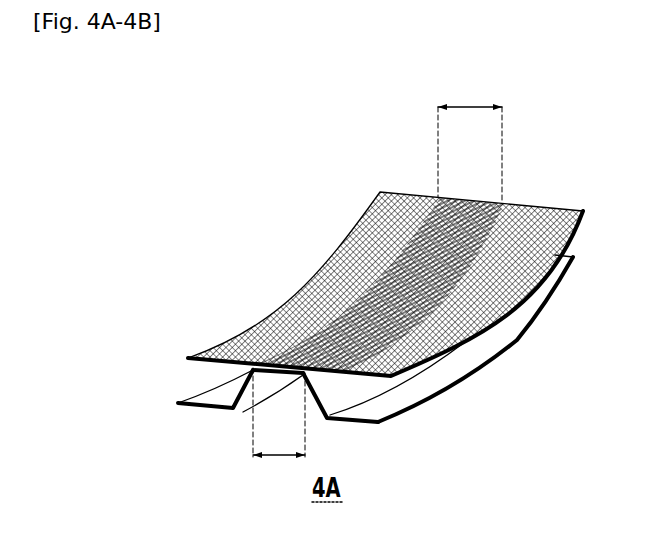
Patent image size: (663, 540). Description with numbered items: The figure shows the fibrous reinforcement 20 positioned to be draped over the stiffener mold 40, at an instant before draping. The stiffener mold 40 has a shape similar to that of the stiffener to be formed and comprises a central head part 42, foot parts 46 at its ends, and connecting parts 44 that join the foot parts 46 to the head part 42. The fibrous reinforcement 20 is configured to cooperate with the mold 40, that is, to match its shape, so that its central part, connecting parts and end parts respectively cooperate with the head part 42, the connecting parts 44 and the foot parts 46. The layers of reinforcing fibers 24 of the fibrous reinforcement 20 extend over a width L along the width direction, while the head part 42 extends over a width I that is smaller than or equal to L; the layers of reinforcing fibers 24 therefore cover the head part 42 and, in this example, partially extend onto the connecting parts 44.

The fibrous reinforcement 20 is at (385, 227).
The layers of reinforcing fibers 24 is at (466, 212).
The stiffener mold 40 is at (375, 359).
The head part 42 is at (279, 372).
The connecting parts 44 is at (343, 390).
The foot parts 46 is at (398, 404).